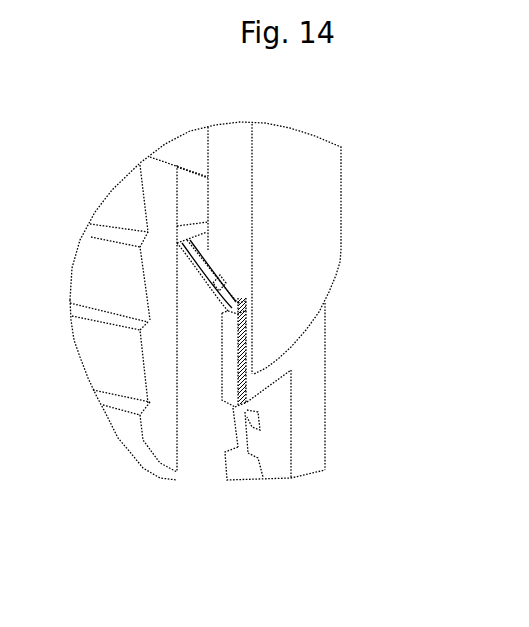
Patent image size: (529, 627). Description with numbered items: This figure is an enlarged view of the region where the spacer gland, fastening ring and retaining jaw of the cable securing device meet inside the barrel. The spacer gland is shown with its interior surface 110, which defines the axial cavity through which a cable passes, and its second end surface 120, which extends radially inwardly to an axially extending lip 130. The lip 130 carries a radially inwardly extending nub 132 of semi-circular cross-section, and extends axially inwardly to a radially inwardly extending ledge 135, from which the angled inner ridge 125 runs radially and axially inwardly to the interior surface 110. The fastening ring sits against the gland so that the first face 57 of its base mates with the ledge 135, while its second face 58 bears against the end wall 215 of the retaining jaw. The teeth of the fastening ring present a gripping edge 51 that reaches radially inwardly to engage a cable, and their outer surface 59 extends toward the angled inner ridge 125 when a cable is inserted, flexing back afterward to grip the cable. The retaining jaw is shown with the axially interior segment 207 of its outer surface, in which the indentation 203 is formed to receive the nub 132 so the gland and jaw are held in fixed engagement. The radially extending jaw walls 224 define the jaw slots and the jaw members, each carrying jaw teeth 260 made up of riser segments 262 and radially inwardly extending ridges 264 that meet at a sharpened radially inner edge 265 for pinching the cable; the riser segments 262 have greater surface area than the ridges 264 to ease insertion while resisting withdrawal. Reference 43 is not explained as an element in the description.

The body 43 is at (88, 364).
The gripping edge 51 is at (189, 231).
The first face 57 is at (245, 300).
The second face 58 is at (228, 314).
The outer surface 59 is at (204, 253).
The interior surface 110 is at (203, 160).
The second end surface 120 is at (250, 368).
The angled inner ridge 125 is at (221, 264).
The axially extending lip 130 is at (248, 321).
The nub 132 is at (244, 347).
The radially inwardly extending ledge 135 is at (242, 294).
The indentation 203 is at (233, 354).
The axially interior segment 207 is at (313, 423).
The end wall 215 is at (221, 310).
The jaw walls 224 is at (165, 363).
The jaw teeth 260 is at (77, 152).
The riser segments 262 is at (115, 202).
The radially inwardly extending ridges 264 is at (112, 403).
The radially inner edge 265 is at (231, 452).